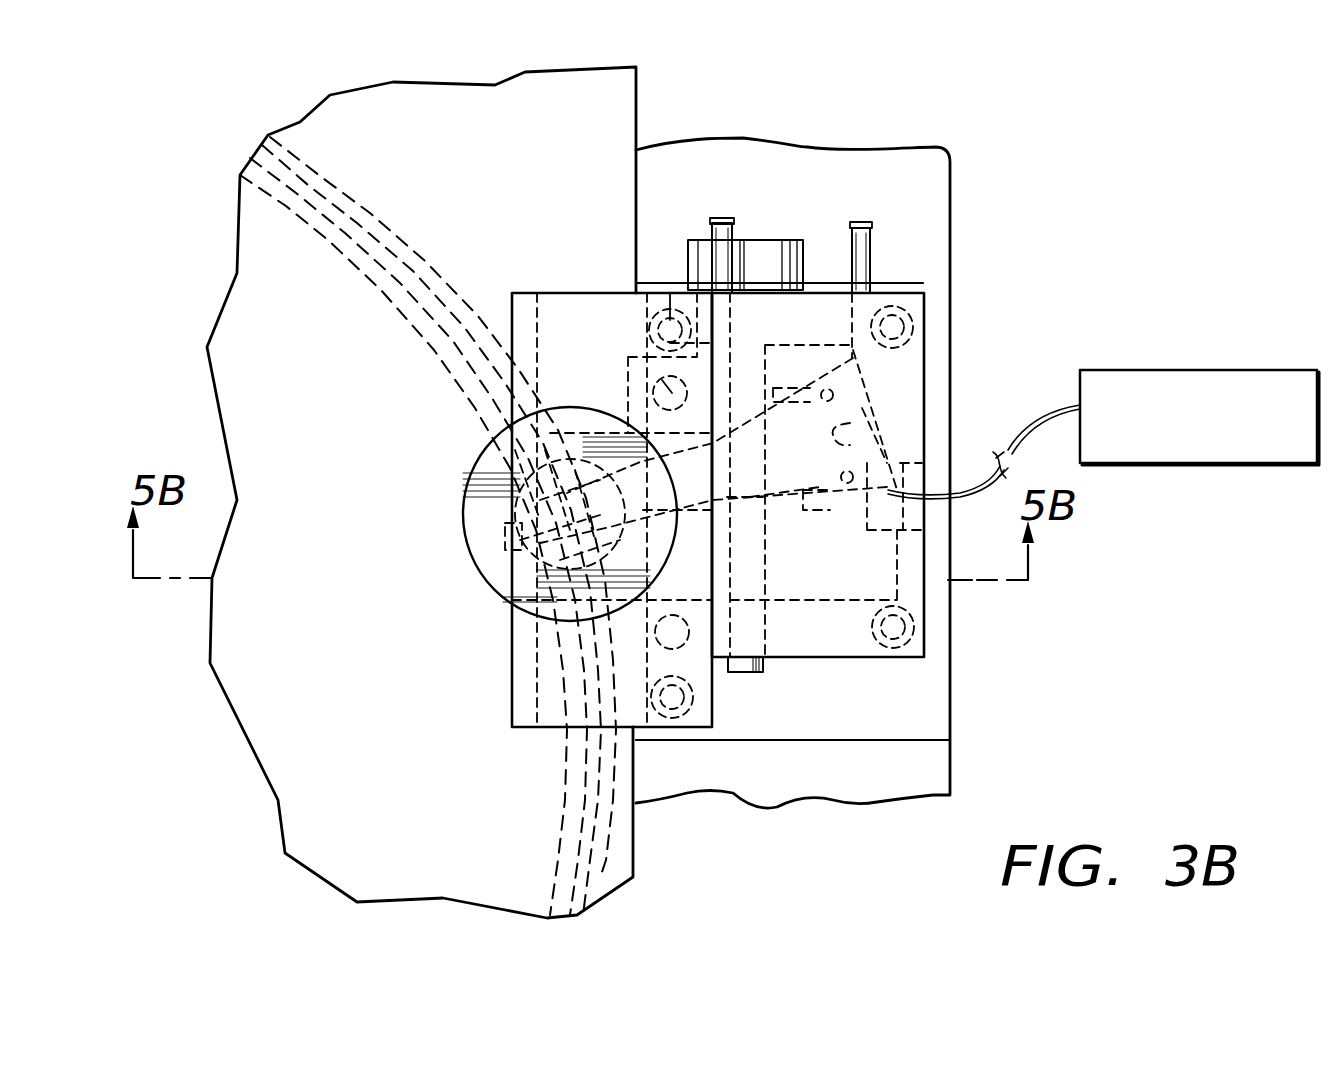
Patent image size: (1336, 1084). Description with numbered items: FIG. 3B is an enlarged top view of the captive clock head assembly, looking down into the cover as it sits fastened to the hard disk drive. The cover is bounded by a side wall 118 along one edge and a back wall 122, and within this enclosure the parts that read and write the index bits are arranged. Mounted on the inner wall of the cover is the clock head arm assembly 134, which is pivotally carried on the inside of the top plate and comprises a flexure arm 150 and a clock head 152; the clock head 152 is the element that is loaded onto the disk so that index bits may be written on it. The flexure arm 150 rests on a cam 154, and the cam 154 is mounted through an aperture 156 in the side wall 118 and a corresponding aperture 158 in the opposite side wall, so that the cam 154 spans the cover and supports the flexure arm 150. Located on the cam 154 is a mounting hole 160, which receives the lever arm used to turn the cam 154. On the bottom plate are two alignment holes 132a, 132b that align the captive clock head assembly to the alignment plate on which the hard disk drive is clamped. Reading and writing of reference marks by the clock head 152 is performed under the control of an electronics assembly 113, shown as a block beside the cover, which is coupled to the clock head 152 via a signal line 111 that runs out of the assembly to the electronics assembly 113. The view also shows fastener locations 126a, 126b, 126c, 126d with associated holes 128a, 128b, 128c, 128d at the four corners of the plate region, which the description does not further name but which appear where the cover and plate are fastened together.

The signal line 111 is at (982, 492).
The electronics assembly 113 is at (1203, 370).
The side wall 118 is at (920, 283).
The back wall 122 is at (950, 367).
The screw 126a is at (760, 764).
The screw 126b is at (1001, 631).
The screw 126c is at (1000, 327).
The screw 126d is at (747, 215).
The mounting hole 128a is at (672, 720).
The mounting hole 128b is at (915, 630).
The mounting hole 128c is at (914, 326).
The mounting hole 128d is at (670, 300).
The alignment hole 132a is at (683, 642).
The alignment hole 132b is at (672, 433).
The clock head arm assembly 134 is at (850, 424).
The flexure arm 150 is at (643, 427).
The clock head 152 is at (478, 458).
The cam 154 is at (763, 250).
The aperture 156 is at (758, 290).
The aperture 158 is at (767, 668).
The mounting hole 160 is at (724, 244).